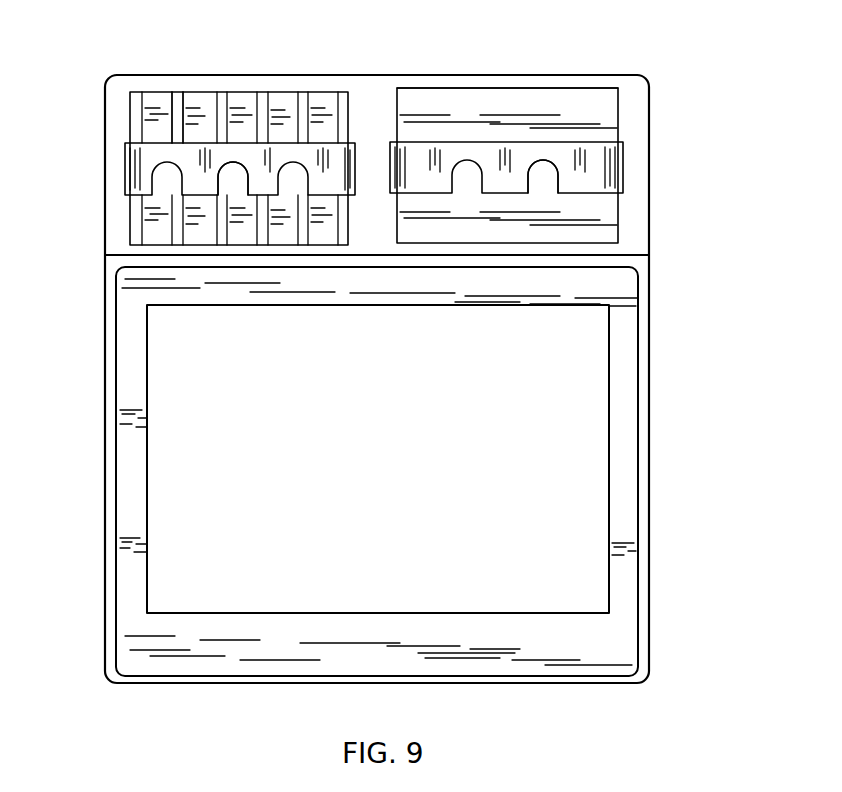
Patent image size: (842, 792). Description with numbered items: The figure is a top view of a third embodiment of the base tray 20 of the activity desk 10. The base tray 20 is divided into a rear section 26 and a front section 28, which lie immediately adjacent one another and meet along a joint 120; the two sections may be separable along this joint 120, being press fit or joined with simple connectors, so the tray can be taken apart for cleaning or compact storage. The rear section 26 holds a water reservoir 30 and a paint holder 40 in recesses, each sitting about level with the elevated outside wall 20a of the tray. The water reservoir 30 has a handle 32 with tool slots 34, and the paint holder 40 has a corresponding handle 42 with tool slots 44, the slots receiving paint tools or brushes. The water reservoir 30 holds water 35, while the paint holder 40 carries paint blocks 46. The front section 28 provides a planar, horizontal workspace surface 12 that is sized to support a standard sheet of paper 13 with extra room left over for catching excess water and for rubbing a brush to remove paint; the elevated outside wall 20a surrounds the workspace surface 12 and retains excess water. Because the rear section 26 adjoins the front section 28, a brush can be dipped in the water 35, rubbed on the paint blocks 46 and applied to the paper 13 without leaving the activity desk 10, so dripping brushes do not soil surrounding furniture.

The activity desk 10 is at (706, 236).
The workspace surface 12 is at (127, 352).
The paper 13 is at (390, 463).
The base tray 20 is at (648, 375).
The elevated outside wall 20a is at (112, 450).
The rear section 26 is at (476, 66).
The front section 28 is at (90, 537).
The water reservoir 30 is at (443, 87).
The handle 32 is at (622, 175).
The tool slot 34 is at (552, 160).
The water 35 is at (533, 100).
The paint holder 40 is at (287, 95).
The handle 42 is at (133, 163).
The tool slot 44 is at (243, 103).
The paint block 46 is at (192, 103).
The joint 120 is at (130, 256).